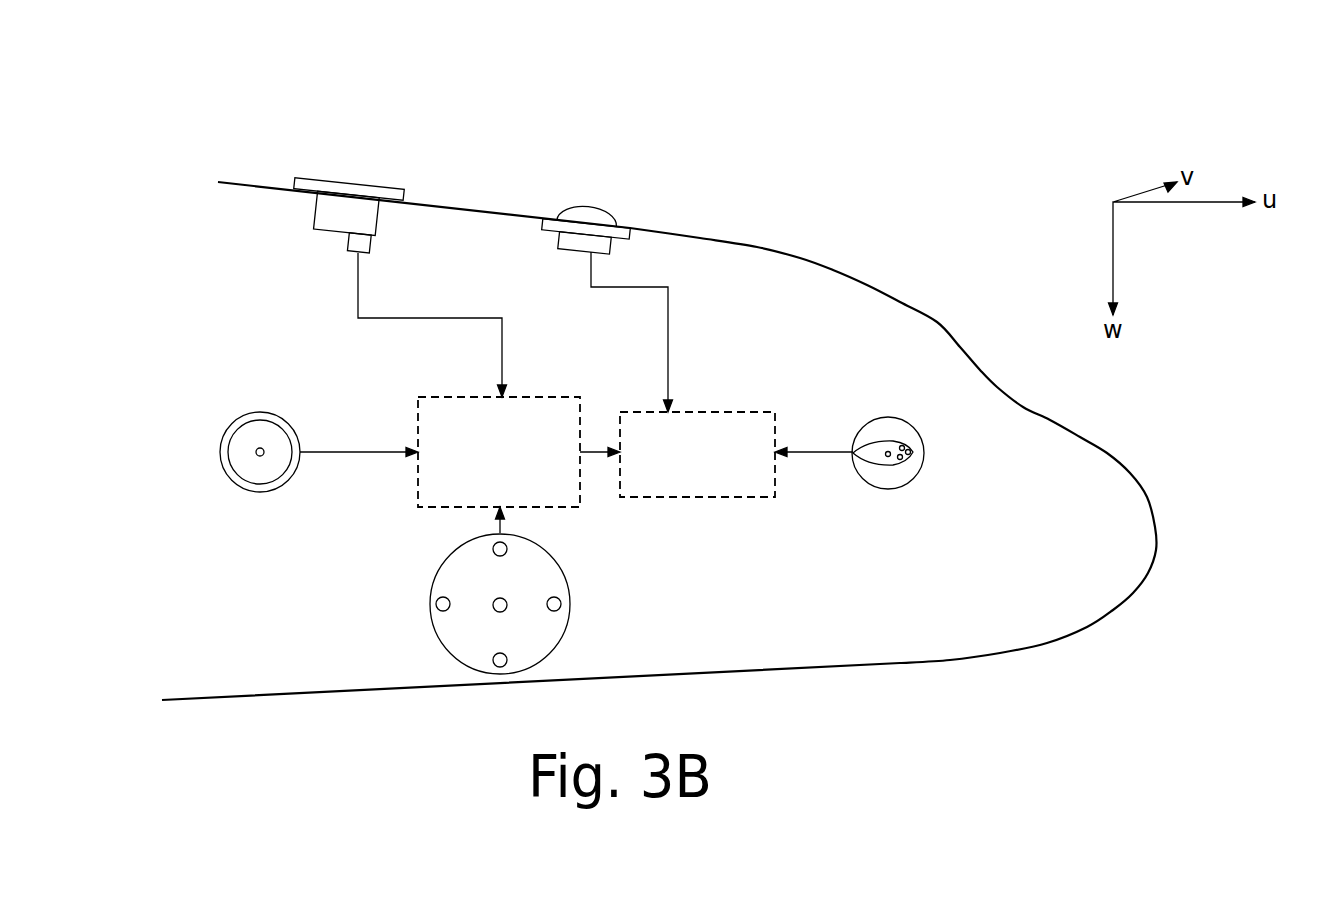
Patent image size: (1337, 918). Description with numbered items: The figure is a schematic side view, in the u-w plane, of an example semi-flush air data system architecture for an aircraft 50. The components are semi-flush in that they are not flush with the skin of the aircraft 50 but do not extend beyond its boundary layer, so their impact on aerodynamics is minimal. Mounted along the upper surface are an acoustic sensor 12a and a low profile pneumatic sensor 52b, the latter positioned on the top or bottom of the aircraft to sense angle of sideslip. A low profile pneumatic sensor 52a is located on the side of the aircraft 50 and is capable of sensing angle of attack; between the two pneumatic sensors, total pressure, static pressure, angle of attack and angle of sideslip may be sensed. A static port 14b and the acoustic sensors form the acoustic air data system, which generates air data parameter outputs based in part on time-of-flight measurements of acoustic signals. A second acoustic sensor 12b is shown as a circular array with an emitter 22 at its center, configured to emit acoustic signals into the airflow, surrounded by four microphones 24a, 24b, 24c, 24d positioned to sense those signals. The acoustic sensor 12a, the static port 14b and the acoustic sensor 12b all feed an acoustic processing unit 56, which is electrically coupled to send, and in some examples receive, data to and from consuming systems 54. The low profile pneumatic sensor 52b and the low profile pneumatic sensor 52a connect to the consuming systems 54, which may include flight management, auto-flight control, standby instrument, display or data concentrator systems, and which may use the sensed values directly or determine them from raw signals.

The aircraft 50 is at (758, 245).
The acoustic sensor 12a is at (345, 181).
The low profile pneumatic sensor 52b is at (595, 182).
The static port 14b is at (258, 412).
The acoustic processing unit 56 is at (543, 397).
The consuming systems 54 is at (738, 412).
The low profile pneumatic sensor 52a is at (888, 417).
The acoustic sensor 12b is at (472, 597).
The emitter 22 is at (506, 601).
The microphone 24a is at (493, 551).
The microphone 24b is at (558, 597).
The microphone 24c is at (507, 659).
The microphone 24d is at (436, 603).